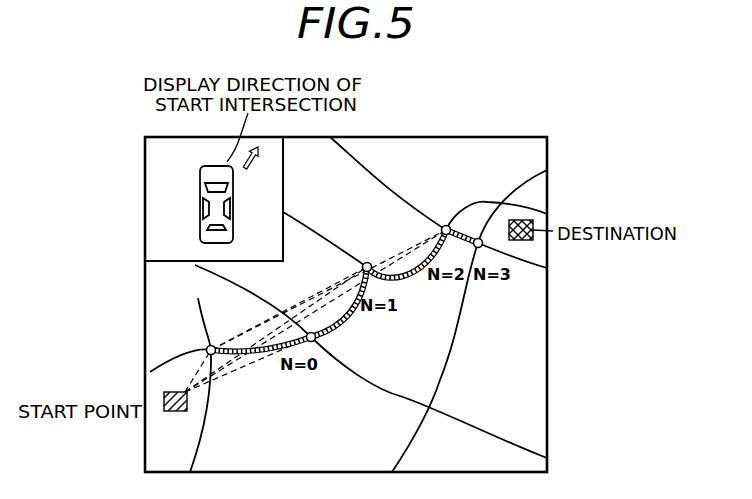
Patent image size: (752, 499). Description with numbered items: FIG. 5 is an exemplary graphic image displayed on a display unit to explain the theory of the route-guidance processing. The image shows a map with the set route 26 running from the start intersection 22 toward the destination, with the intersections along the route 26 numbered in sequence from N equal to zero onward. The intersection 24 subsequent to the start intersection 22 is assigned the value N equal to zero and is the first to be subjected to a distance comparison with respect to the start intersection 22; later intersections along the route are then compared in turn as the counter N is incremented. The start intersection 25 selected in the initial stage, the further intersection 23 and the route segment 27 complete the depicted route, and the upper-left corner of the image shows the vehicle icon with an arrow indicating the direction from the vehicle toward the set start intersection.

The start intersection 22 is at (207, 347).
The destination intersection 23 is at (477, 239).
The intersection subsequent to the start intersection 24 is at (315, 342).
The start intersection 25 is at (163, 398).
The set route 26 is at (343, 317).
The route road segment 27 is at (413, 272).